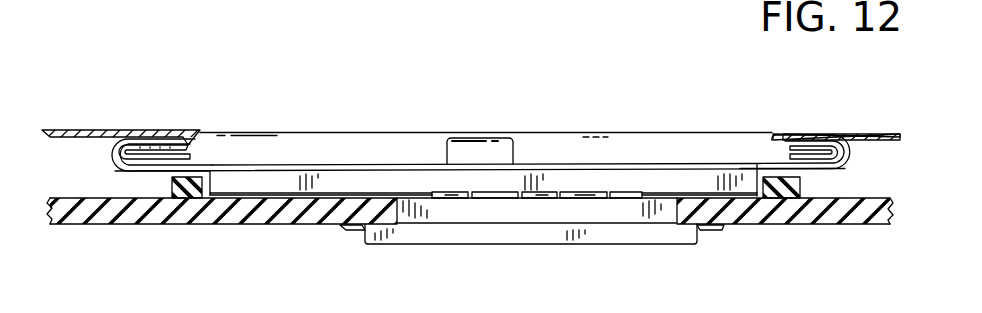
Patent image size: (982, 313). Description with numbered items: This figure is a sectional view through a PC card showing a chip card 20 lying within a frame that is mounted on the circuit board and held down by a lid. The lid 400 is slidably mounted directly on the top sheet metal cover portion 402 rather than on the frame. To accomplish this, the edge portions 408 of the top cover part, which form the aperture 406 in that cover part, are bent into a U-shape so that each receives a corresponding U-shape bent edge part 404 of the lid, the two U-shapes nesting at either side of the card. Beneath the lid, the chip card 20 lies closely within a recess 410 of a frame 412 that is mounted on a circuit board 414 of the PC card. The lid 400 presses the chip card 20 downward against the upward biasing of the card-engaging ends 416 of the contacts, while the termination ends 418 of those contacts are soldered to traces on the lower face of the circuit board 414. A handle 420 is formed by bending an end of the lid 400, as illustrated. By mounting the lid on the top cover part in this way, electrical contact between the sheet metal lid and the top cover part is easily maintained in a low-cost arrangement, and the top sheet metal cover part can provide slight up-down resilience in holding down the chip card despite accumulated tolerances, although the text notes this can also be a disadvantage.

The chip card 20 is at (399, 175).
The lid 400 is at (608, 163).
The top sheet metal cover portion 402 is at (870, 135).
The U-shape bent edge part 404 is at (200, 132).
The aperture 406 is at (757, 137).
The edge portions 408 is at (127, 131).
The recess 410 is at (217, 183).
The frame 412 is at (173, 180).
The circuit board 414 is at (88, 227).
The card-engaging ends 416 is at (460, 198).
The termination ends 418 is at (710, 230).
The handle 420 is at (488, 138).